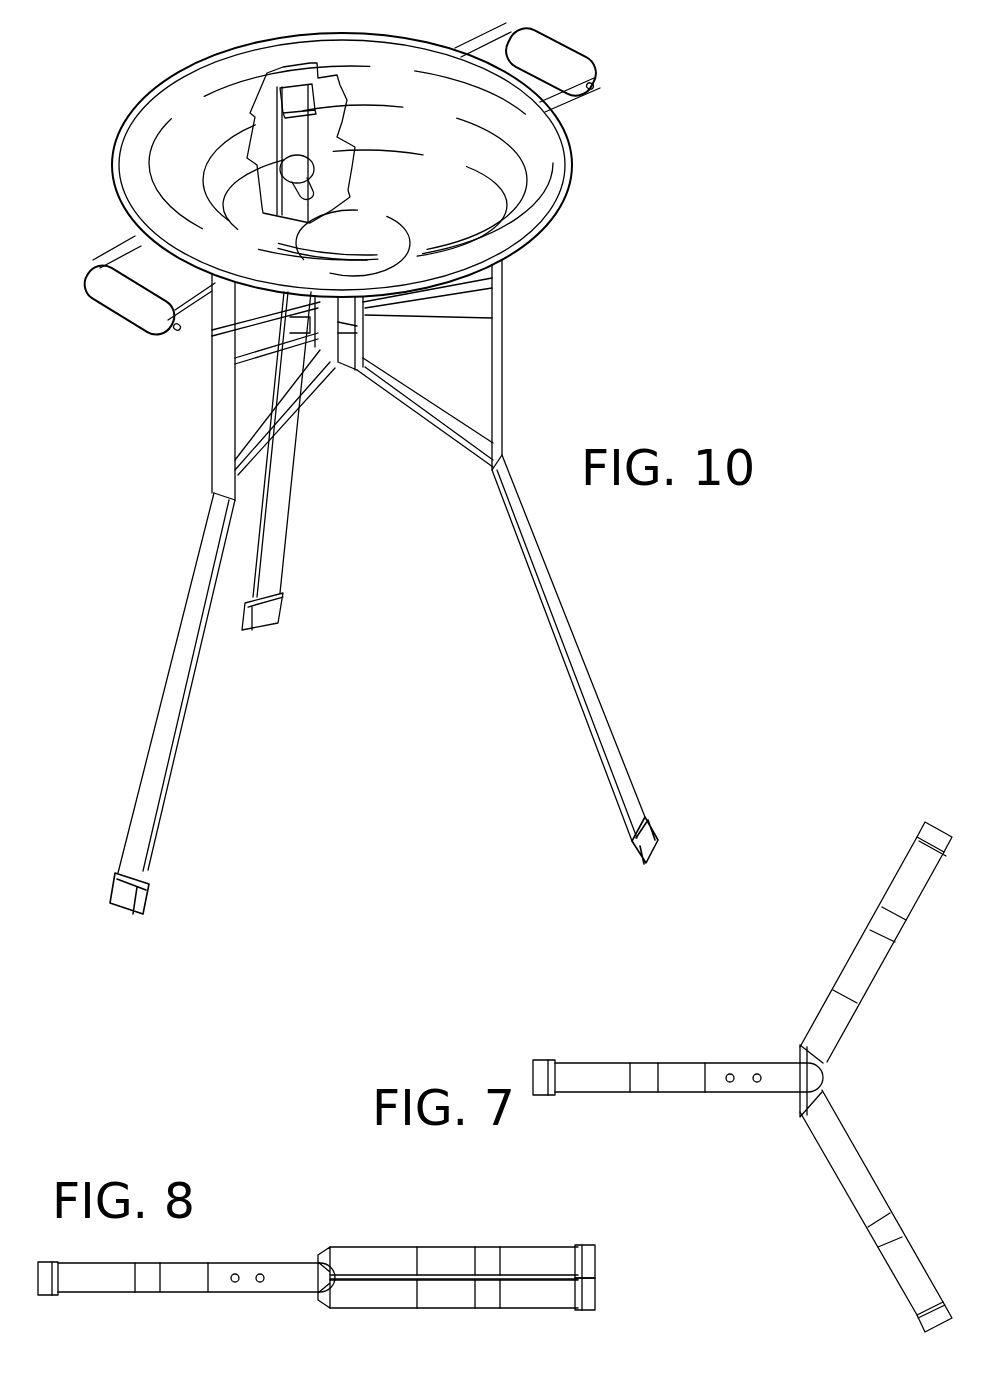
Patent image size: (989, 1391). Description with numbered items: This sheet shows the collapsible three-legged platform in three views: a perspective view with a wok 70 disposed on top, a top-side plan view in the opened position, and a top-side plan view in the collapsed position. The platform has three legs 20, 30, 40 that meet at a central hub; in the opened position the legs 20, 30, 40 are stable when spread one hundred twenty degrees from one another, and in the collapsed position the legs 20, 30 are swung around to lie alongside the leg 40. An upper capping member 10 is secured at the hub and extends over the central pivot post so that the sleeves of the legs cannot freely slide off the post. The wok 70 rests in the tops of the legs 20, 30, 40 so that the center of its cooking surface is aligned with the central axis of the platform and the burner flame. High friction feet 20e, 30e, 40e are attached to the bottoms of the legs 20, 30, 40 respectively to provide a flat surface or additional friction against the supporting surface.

In FIG. 7, the upper capping member 10 is at (773, 1075).
In FIG. 8, the upper capping member 10 is at (288, 1272).
In FIG. 10, the leg 20 is at (553, 397).
In FIG. 7, the leg 20 is at (845, 963).
In FIG. 8, the leg 20 is at (445, 1250).
In FIG. 10, the high friction foot 20e is at (632, 855).
In FIG. 10, the leg 30 is at (190, 452).
In FIG. 7, the leg 30 is at (830, 1170).
In FIG. 8, the leg 30 is at (510, 1306).
In FIG. 10, the high friction foot 30e is at (150, 889).
In FIG. 10, the leg 40 is at (272, 122).
In FIG. 7, the leg 40 is at (673, 1063).
In FIG. 8, the leg 40 is at (175, 1294).
In FIG. 10, the high friction foot 40e is at (275, 600).
In FIG. 10, the wok 70 is at (525, 192).